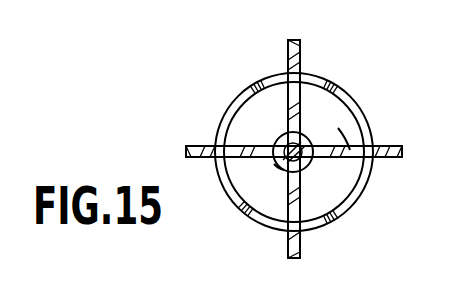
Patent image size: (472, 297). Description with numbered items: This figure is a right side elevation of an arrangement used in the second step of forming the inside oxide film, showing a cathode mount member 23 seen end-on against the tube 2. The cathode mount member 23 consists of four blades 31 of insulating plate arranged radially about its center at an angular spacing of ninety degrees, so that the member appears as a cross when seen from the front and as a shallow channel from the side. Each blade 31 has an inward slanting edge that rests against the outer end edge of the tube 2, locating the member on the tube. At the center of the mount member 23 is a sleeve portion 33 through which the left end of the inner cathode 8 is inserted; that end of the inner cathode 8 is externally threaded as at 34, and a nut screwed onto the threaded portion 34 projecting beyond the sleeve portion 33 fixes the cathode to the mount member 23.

The tube 2 is at (362, 186).
The inner cathode 8 is at (305, 168).
The cathode mount member 23 is at (348, 140).
The blade 31 is at (300, 42).
The sleeve portion 33 is at (280, 138).
The externally threaded portion 34 is at (278, 165).